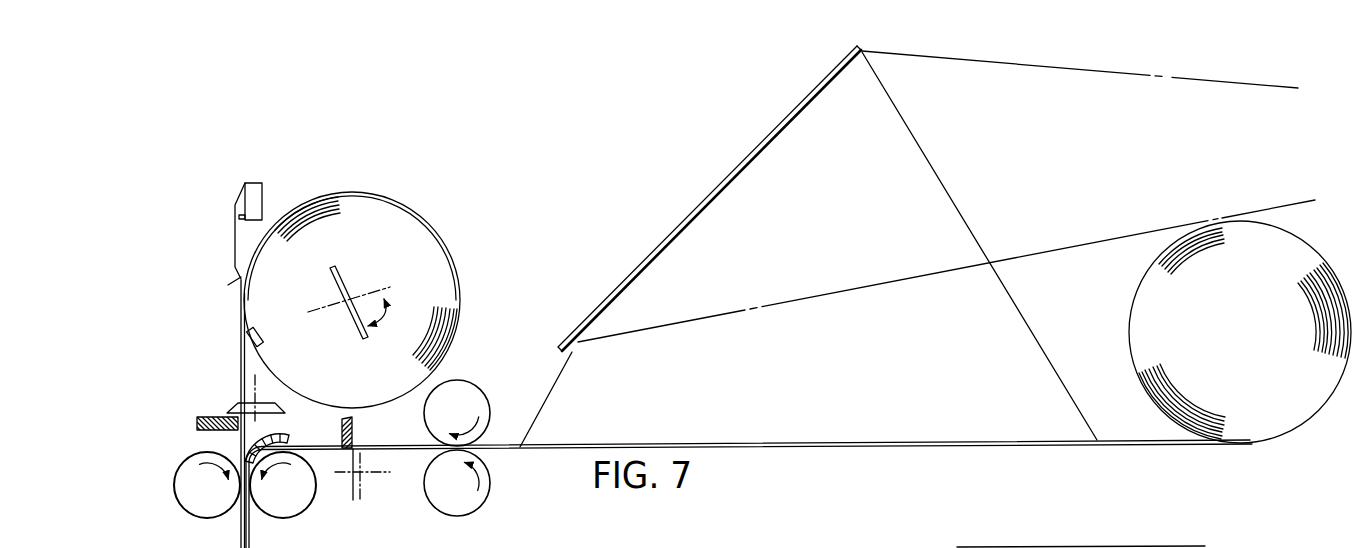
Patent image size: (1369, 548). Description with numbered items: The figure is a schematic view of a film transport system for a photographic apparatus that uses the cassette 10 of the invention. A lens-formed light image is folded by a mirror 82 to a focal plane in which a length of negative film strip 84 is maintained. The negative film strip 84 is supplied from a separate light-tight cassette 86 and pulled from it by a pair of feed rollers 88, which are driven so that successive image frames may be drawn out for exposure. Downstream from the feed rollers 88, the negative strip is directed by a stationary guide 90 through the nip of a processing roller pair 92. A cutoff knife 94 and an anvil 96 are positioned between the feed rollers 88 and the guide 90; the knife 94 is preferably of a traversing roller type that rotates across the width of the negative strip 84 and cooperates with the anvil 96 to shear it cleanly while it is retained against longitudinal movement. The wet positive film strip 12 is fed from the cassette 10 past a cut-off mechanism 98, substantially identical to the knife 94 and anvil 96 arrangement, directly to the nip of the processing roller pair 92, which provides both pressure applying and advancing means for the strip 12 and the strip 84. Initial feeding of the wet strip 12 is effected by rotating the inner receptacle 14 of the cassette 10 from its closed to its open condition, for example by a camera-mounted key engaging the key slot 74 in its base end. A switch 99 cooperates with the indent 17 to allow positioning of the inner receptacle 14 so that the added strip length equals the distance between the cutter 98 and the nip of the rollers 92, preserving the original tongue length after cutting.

The cassette 10 is at (371, 291).
The inner receptacle 14 is at (373, 244).
The key slot 74 is at (343, 272).
The indent 17 is at (258, 330).
The wet positive film strip 12 is at (240, 352).
The switch 99 is at (262, 194).
The cut-off mechanism 98 is at (227, 412).
The stationary guide 90 is at (289, 436).
The anvil 96 is at (352, 420).
The cutoff knife 94 is at (353, 500).
The processing roller pair 92 is at (267, 507).
The feed rollers 88 is at (488, 435).
The mirror 82 is at (769, 149).
The negative film strip 84 is at (838, 447).
The light-tight cassette 86 is at (1235, 303).